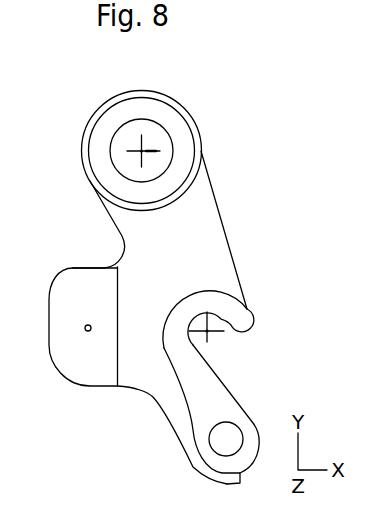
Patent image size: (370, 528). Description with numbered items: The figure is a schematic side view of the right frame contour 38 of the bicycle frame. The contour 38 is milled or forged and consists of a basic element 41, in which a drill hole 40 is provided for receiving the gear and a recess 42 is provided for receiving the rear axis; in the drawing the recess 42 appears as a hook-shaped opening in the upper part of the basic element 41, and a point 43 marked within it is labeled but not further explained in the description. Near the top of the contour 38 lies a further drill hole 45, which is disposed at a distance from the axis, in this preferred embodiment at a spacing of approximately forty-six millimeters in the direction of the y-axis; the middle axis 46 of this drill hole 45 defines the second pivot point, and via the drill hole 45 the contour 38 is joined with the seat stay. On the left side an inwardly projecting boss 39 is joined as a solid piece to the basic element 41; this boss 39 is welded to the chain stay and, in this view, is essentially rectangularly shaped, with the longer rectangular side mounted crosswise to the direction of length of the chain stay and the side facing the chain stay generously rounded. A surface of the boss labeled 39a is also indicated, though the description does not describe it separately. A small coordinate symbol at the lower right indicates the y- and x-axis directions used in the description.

The contour 38 is at (233, 240).
The boss 39 is at (78, 368).
The abutment surface of lug 39a is at (80, 268).
The drill hole 40 is at (218, 450).
The basic element 41 is at (152, 381).
The recess 42 is at (250, 306).
The hook center 43 is at (209, 335).
The drill hole 45 is at (153, 127).
The middle axis 46 is at (170, 151).